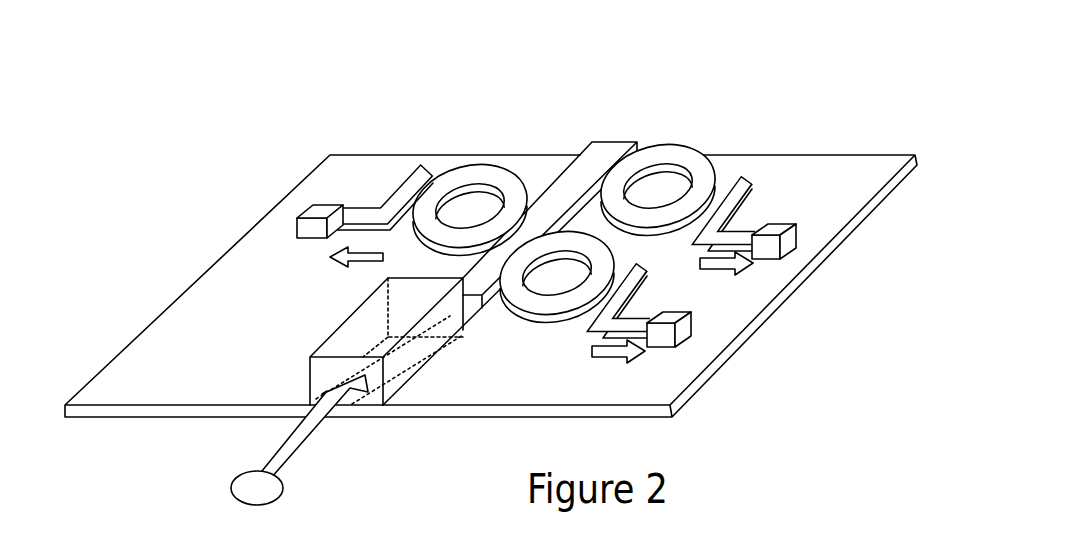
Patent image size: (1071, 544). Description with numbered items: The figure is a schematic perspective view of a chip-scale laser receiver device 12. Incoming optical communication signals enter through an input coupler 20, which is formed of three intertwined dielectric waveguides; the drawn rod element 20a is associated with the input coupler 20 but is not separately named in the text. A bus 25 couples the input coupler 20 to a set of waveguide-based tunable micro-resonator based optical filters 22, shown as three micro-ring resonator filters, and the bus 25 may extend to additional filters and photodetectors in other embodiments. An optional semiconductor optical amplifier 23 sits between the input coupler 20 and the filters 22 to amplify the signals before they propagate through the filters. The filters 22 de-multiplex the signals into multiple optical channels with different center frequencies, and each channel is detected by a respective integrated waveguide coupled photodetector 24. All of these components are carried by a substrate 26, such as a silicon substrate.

The laser receiver device 12 is at (500, 266).
The input coupler 20 is at (302, 372).
The actuator rod 20a is at (400, 362).
The waveguide-based tunable micro-resonator based optical filters 22 is at (320, 212).
The semiconductor optical amplifier 23 is at (433, 300).
The integrated waveguide coupled photodetectors 24 is at (688, 330).
The bus 25 is at (598, 153).
The substrate 26 is at (882, 163).